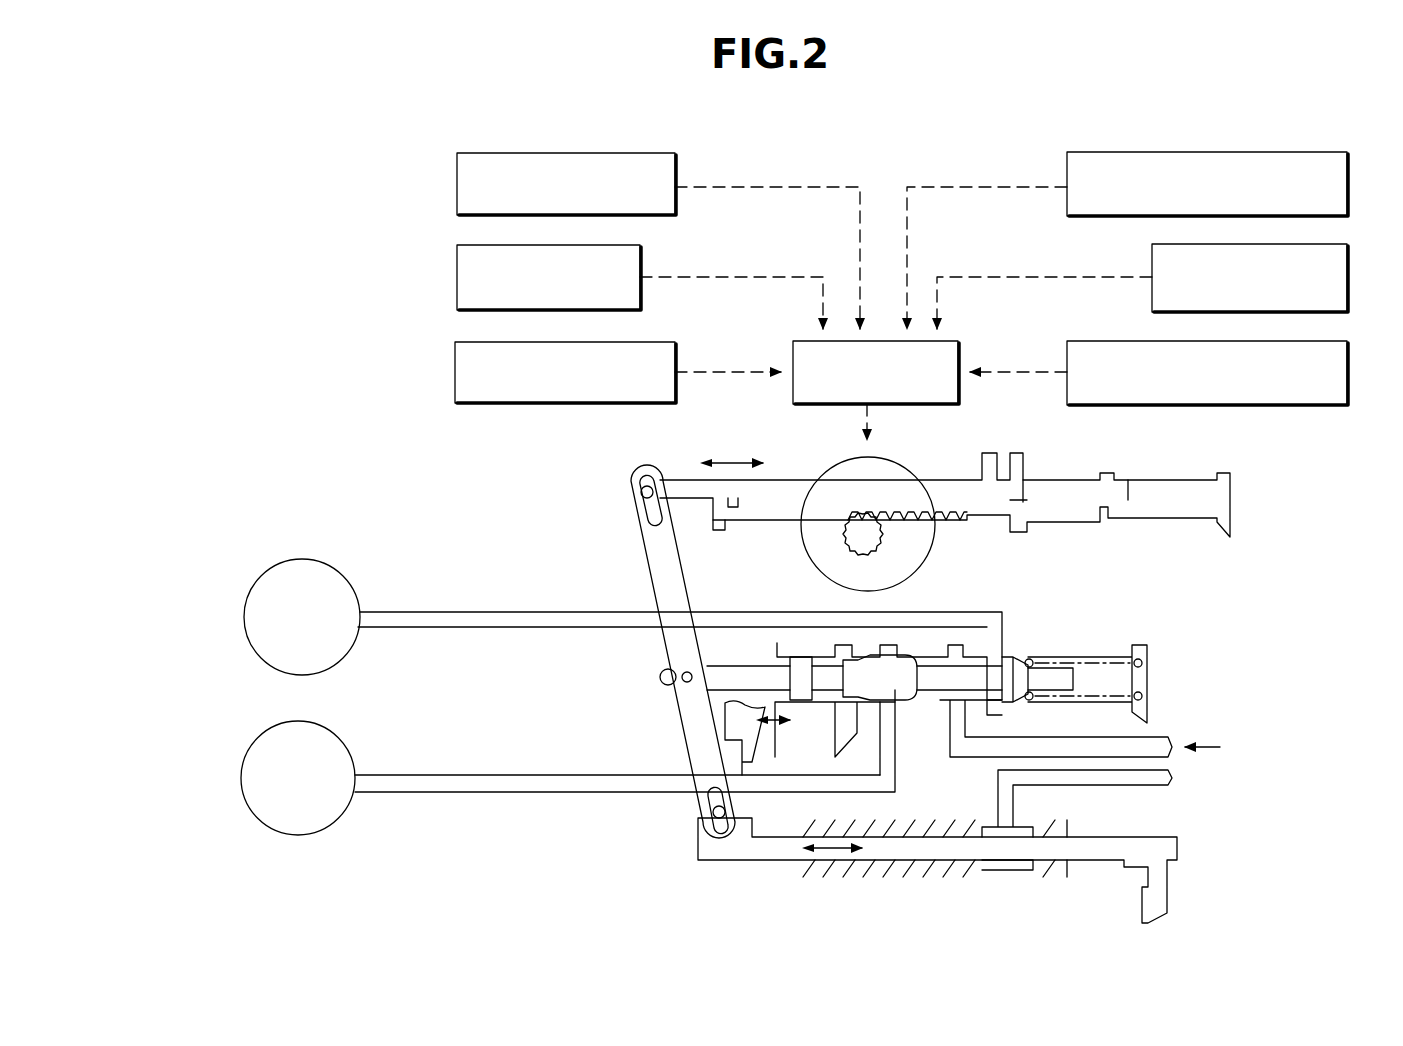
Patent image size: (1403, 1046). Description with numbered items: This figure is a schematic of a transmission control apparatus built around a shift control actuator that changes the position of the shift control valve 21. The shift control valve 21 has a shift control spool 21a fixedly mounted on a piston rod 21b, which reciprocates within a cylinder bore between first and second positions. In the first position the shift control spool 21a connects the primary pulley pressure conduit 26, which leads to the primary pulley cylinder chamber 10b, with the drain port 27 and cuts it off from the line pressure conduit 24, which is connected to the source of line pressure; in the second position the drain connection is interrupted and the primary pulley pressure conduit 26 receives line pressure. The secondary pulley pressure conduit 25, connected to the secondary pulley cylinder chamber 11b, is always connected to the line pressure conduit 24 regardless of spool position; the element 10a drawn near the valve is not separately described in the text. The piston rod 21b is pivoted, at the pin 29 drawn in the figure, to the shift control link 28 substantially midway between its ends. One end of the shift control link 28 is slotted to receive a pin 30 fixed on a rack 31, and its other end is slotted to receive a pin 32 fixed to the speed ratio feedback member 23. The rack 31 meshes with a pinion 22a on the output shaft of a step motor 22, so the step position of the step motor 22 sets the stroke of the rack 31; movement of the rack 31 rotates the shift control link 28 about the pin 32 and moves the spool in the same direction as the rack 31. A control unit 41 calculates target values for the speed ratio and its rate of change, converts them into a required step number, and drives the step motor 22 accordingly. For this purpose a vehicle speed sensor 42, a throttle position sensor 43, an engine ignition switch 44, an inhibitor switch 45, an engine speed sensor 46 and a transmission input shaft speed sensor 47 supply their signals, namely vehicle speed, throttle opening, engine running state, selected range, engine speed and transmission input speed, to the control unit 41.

The pawl of the shift fork 10a is at (755, 757).
The primary pulley cylinder chamber 10b is at (253, 757).
The secondary pulley cylinder chamber 11b is at (247, 600).
The shift control valve 21 is at (1020, 640).
The shift control spool 21a is at (905, 655).
The piston rod 21b is at (735, 680).
The step motor 22 is at (935, 530).
The pinion 22a is at (855, 532).
The speed ratio feedback member 23 is at (1092, 862).
The line pressure conduit 24 is at (972, 760).
The secondary pulley pressure conduit 25 is at (585, 612).
The primary pulley pressure conduit 26 is at (578, 775).
The drain port 27 is at (878, 735).
The shift control link 28 is at (675, 583).
The intermediate pivot pin 29 is at (660, 677).
The pin 30 is at (638, 485).
The rack 31 is at (805, 480).
The pin 32 is at (721, 830).
The control unit 41 is at (873, 341).
The vehicle speed sensor 42 is at (455, 380).
The throttle position sensor 43 is at (1347, 392).
The engine ignition switch 44 is at (457, 285).
The inhibitor switch 45 is at (1347, 300).
The engine speed sensor 46 is at (457, 193).
The transmission input shaft speed sensor 47 is at (1347, 185).